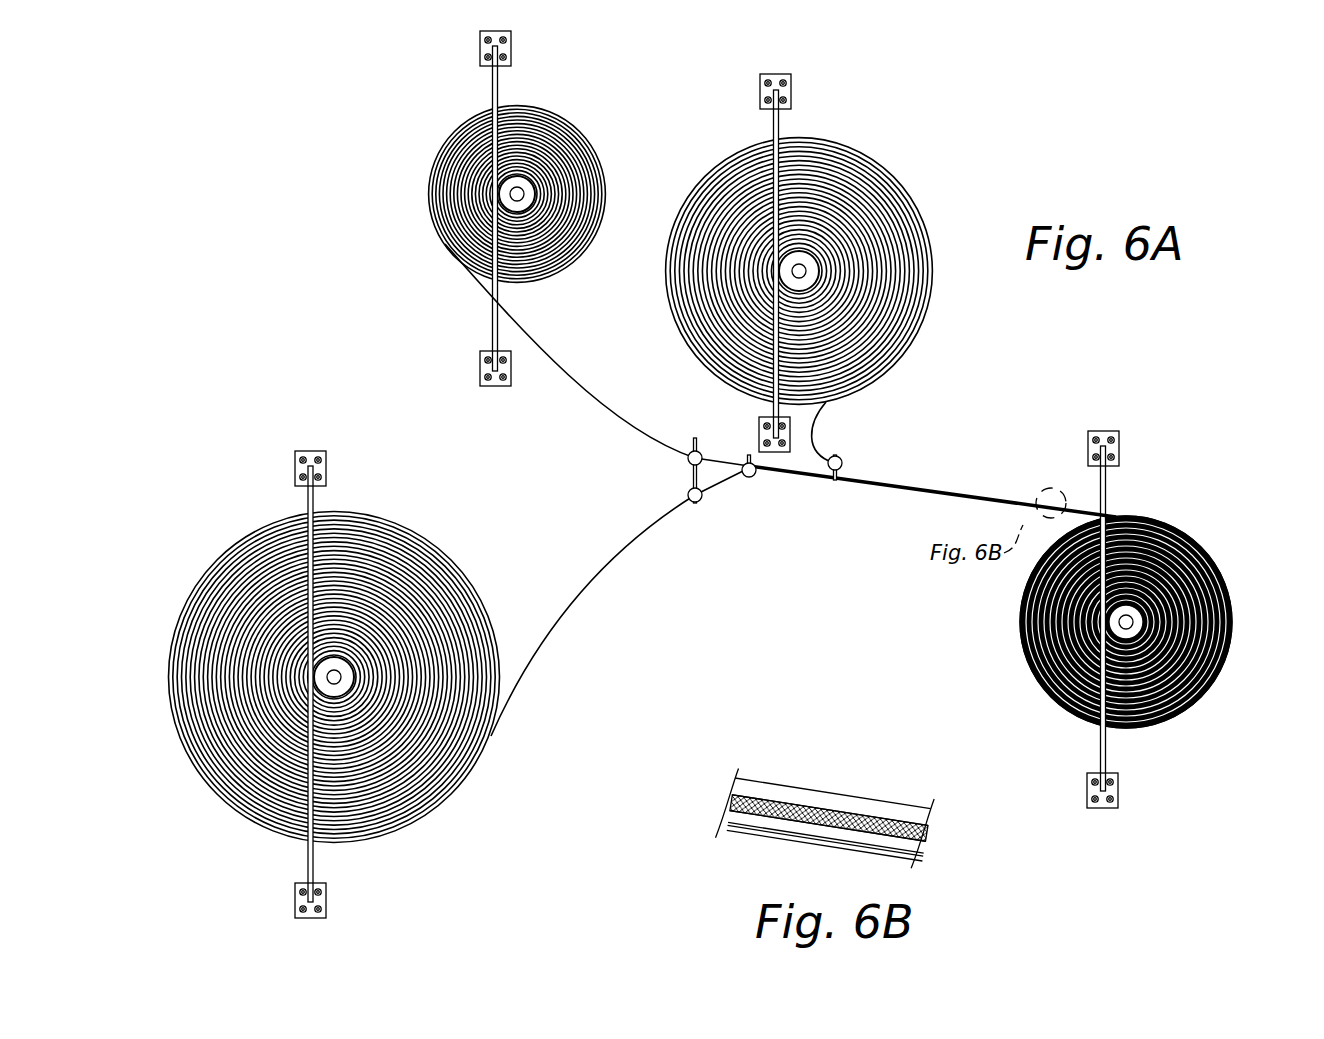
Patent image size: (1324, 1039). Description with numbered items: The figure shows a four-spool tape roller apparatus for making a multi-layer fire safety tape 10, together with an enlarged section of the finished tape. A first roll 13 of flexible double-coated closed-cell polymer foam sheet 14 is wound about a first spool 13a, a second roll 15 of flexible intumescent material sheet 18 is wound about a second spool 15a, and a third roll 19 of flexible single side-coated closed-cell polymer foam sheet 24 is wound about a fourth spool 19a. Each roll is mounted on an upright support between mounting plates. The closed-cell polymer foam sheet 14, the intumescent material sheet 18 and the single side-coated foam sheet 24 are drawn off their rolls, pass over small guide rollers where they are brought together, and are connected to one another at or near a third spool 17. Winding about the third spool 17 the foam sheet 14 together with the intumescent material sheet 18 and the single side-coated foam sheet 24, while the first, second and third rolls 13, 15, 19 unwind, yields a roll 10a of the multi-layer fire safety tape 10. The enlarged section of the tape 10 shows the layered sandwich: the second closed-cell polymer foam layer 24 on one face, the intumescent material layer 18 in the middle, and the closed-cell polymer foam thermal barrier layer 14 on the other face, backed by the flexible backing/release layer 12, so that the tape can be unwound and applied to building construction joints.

In FIG. 6A, the multi-layer fire safety tape 10 is at (1110, 490).
In FIG. 6B, the multi-layer fire safety tape 10 is at (813, 756).
In FIG. 6A, the roll of the multi-layer fire safety tape 10a is at (1222, 520).
In FIG. 6B, the backing/release layer 12 is at (821, 866).
In FIG. 6A, the first roll 13 is at (184, 536).
In FIG. 6A, the first spool 13a is at (340, 663).
In FIG. 6A, the closed-cell polymer foam thermal barrier layer 14 is at (577, 587).
In FIG. 6B, the closed-cell polymer foam thermal barrier layer 14 is at (811, 850).
In FIG. 6A, the second roll 15 is at (418, 131).
In FIG. 6A, the second spool 15a is at (517, 192).
In FIG. 6A, the third spool 17 is at (1217, 582).
In FIG. 6A, the intumescent material layer 18 is at (567, 367).
In FIG. 6B, the intumescent material layer 18 is at (859, 834).
In FIG. 6A, the third roll 19 is at (850, 126).
In FIG. 6A, the fourth spool 19a is at (799, 263).
In FIG. 6A, the second closed-cell polymer foam layer 24 is at (812, 414).
In FIG. 6B, the second closed-cell polymer foam layer 24 is at (841, 778).